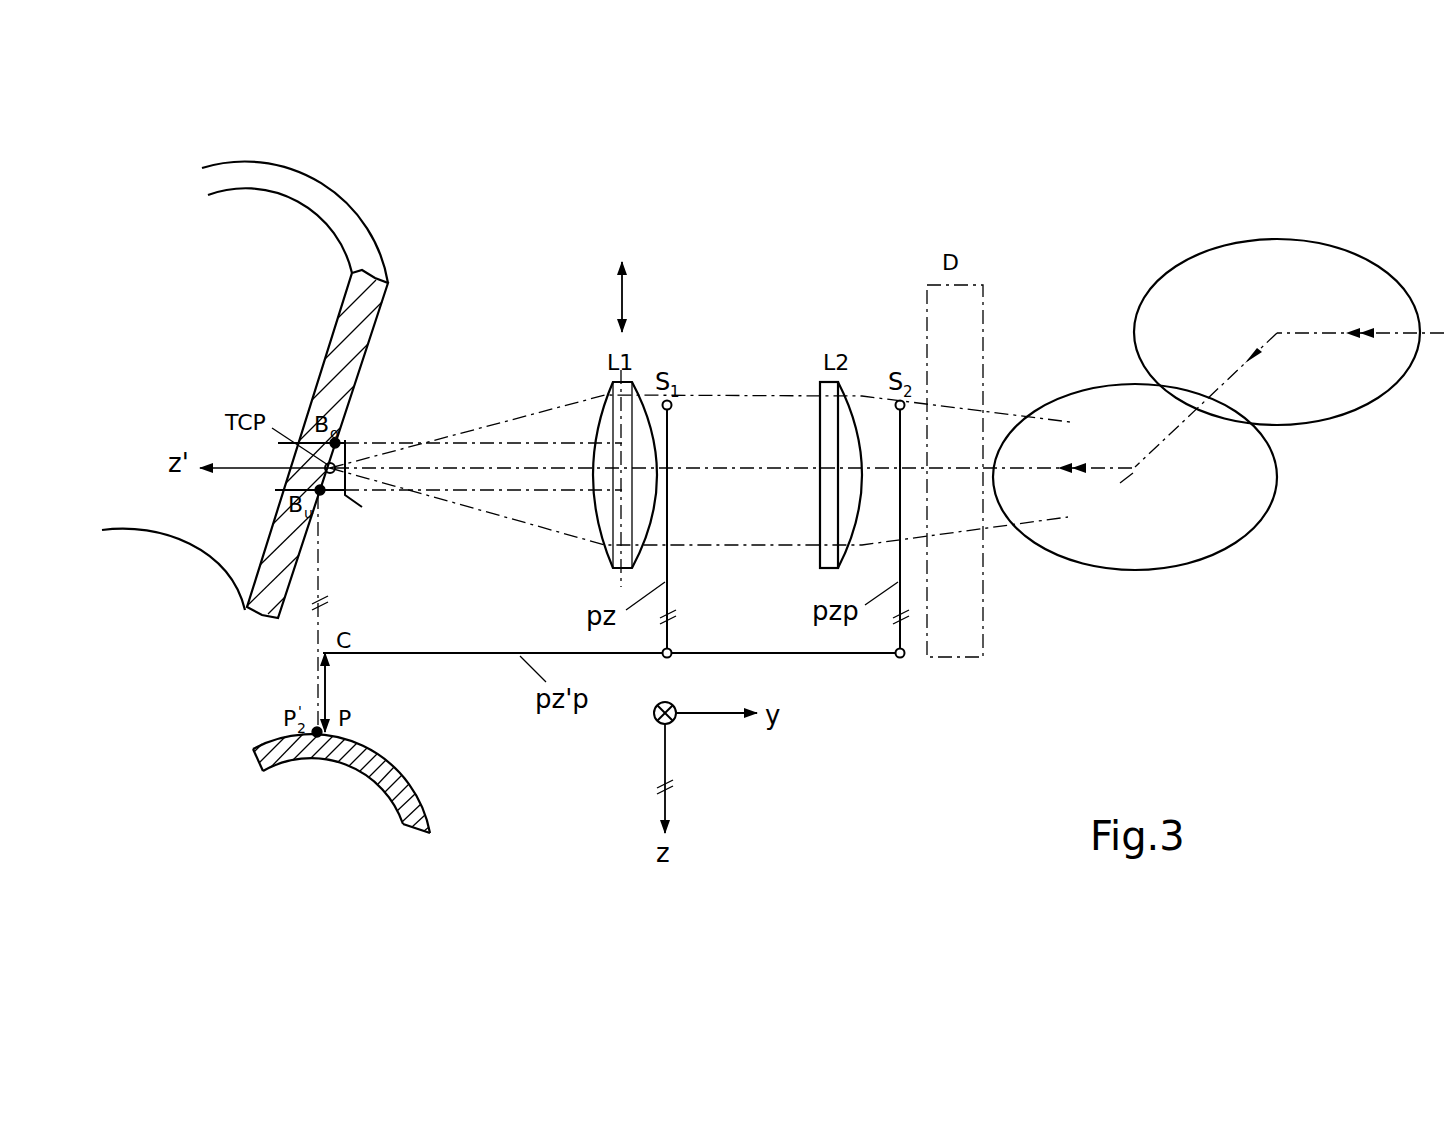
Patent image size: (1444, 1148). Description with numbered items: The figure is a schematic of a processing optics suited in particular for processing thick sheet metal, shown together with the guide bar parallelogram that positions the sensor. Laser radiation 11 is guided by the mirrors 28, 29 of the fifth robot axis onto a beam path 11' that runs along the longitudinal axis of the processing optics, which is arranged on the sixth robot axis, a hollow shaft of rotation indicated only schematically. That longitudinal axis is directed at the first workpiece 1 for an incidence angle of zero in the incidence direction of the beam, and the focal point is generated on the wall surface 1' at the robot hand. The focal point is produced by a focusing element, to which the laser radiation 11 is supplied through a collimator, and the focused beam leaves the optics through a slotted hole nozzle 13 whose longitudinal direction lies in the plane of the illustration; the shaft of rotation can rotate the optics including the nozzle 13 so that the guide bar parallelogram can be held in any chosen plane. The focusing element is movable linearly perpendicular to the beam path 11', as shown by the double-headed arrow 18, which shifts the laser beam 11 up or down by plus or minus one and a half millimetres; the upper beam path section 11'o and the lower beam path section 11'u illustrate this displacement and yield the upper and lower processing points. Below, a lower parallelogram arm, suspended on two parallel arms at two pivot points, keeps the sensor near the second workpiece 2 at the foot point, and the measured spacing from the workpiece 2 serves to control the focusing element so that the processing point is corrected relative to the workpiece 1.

The first workpiece 1 is at (317, 223).
The wall surface 1' is at (336, 444).
The second workpiece 2 is at (356, 758).
The laser radiation 11 is at (732, 446).
The beam path 11' is at (1222, 423).
The upper beam path section 11'o is at (507, 399).
The lower beam path section 11'u is at (483, 540).
The slotted hole nozzle 13 is at (345, 440).
The double-headed arrow 18 is at (624, 297).
The mirror 28 is at (1306, 290).
The mirror 29 is at (1184, 536).